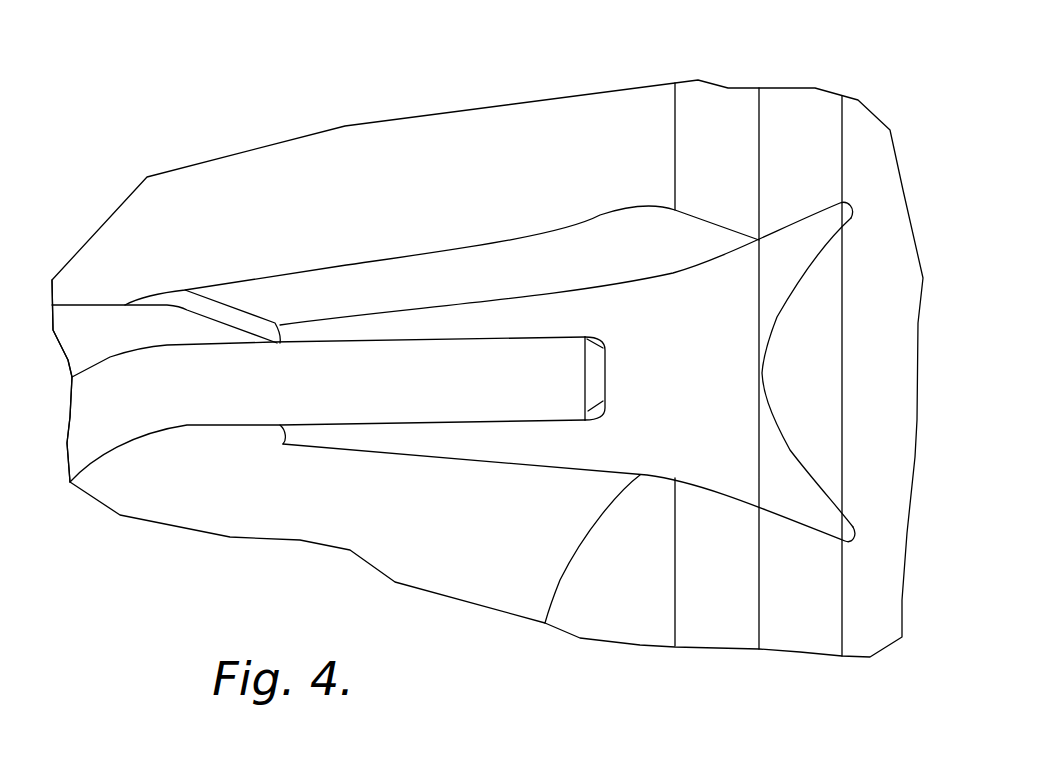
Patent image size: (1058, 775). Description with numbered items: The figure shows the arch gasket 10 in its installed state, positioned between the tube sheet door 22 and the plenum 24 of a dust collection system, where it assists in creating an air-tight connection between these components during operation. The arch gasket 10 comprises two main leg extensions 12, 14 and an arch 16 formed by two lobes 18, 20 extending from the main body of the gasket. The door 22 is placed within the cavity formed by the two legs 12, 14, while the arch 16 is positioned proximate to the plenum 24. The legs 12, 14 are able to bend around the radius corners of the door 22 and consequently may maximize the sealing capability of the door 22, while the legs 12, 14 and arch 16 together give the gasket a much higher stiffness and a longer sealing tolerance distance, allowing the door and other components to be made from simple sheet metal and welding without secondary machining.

The arch gasket 10 is at (348, 243).
The main leg extension 12 is at (552, 282).
The main leg extension 14 is at (367, 443).
The arch 16 is at (763, 375).
The lobe 18 is at (812, 220).
The lobe 20 is at (812, 523).
The tube sheet door 22 is at (100, 422).
The plenum 24 is at (793, 110).